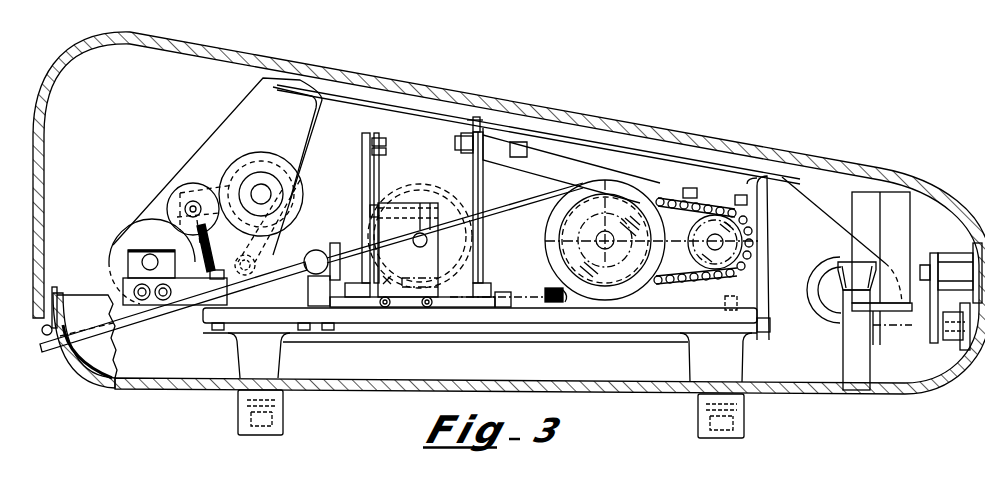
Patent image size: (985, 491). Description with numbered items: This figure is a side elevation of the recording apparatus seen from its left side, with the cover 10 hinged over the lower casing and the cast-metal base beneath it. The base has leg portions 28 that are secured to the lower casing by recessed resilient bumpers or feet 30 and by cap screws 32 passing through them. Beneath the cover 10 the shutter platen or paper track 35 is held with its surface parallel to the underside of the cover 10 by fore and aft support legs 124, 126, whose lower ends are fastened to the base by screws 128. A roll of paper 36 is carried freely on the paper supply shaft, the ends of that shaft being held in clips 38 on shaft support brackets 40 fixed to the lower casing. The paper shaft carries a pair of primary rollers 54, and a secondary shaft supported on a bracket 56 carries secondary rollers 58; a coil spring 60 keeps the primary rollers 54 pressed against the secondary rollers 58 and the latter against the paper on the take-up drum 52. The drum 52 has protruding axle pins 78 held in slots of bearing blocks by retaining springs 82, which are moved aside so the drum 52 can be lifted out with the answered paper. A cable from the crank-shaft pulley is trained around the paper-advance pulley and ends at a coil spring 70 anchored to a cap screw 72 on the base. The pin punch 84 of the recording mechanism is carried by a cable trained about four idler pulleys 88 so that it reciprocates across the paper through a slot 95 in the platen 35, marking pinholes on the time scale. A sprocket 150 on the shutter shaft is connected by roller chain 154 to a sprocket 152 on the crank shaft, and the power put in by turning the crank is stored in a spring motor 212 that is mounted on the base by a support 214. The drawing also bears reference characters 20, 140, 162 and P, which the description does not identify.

The cover 10 is at (675, 130).
The drive coupling assembly 20 is at (975, 252).
The leg portions 28 is at (284, 352).
The recessed bumpers or feet 30 is at (280, 405).
The cap screws 32 is at (257, 429).
The shutter platen 35 is at (550, 142).
The roll of paper 36 is at (821, 267).
The clips 38 is at (840, 258).
The shaft support brackets 40 is at (844, 348).
The paper take-up roll 52 is at (120, 252).
The primary rollers 54 is at (270, 158).
The bracket 56 is at (214, 195).
The secondary rollers 58 is at (189, 196).
The coil spring 60 is at (220, 250).
The coil spring 70 is at (546, 286).
The cap screw 72 is at (734, 293).
The axle pins 78 is at (156, 250).
The retaining springs 82 is at (135, 250).
The pin punch 84 is at (458, 134).
The idler pulleys 88 is at (133, 272).
The slot 95 is at (482, 124).
The fore support leg 124 is at (322, 106).
The aft support leg 126 is at (769, 214).
The screws 128 is at (215, 329).
The drive wheel 140 is at (552, 236).
The sprocket 150 is at (735, 243).
The sprocket 152 is at (611, 186).
The roller chain 154 is at (676, 194).
The connecting rod 162 is at (363, 247).
The spring motor 212 is at (414, 189).
The support 214 is at (436, 255).
The path P is at (800, 200).